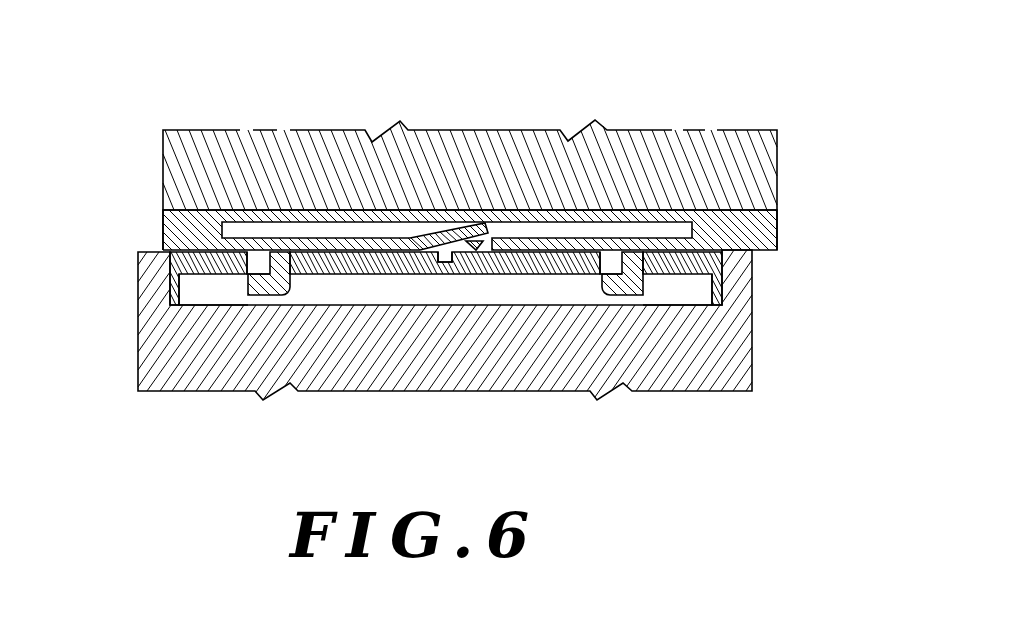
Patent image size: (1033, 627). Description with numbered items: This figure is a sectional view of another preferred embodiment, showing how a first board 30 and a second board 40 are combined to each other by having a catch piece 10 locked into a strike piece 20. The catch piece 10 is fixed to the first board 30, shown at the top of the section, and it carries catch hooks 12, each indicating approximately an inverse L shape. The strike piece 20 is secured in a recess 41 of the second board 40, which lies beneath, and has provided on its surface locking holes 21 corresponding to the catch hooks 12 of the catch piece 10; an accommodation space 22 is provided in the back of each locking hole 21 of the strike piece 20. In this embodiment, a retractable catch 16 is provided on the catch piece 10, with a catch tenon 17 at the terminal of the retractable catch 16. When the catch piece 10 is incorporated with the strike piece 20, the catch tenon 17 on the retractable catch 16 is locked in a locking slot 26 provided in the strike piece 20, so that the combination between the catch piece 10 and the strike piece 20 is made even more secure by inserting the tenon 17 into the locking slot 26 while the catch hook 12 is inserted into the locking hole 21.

The catch piece 10 is at (165, 232).
The catch hook 12 is at (268, 293).
The retractable catch 16 is at (452, 228).
The catch tenon 17 is at (477, 250).
The strike piece 20 is at (172, 264).
The locking hole 21 is at (605, 253).
The accommodation space 22 is at (676, 292).
The locking slot 26 is at (443, 263).
The first board 30 is at (343, 142).
The second board 40 is at (707, 367).
The recess 41 is at (197, 305).